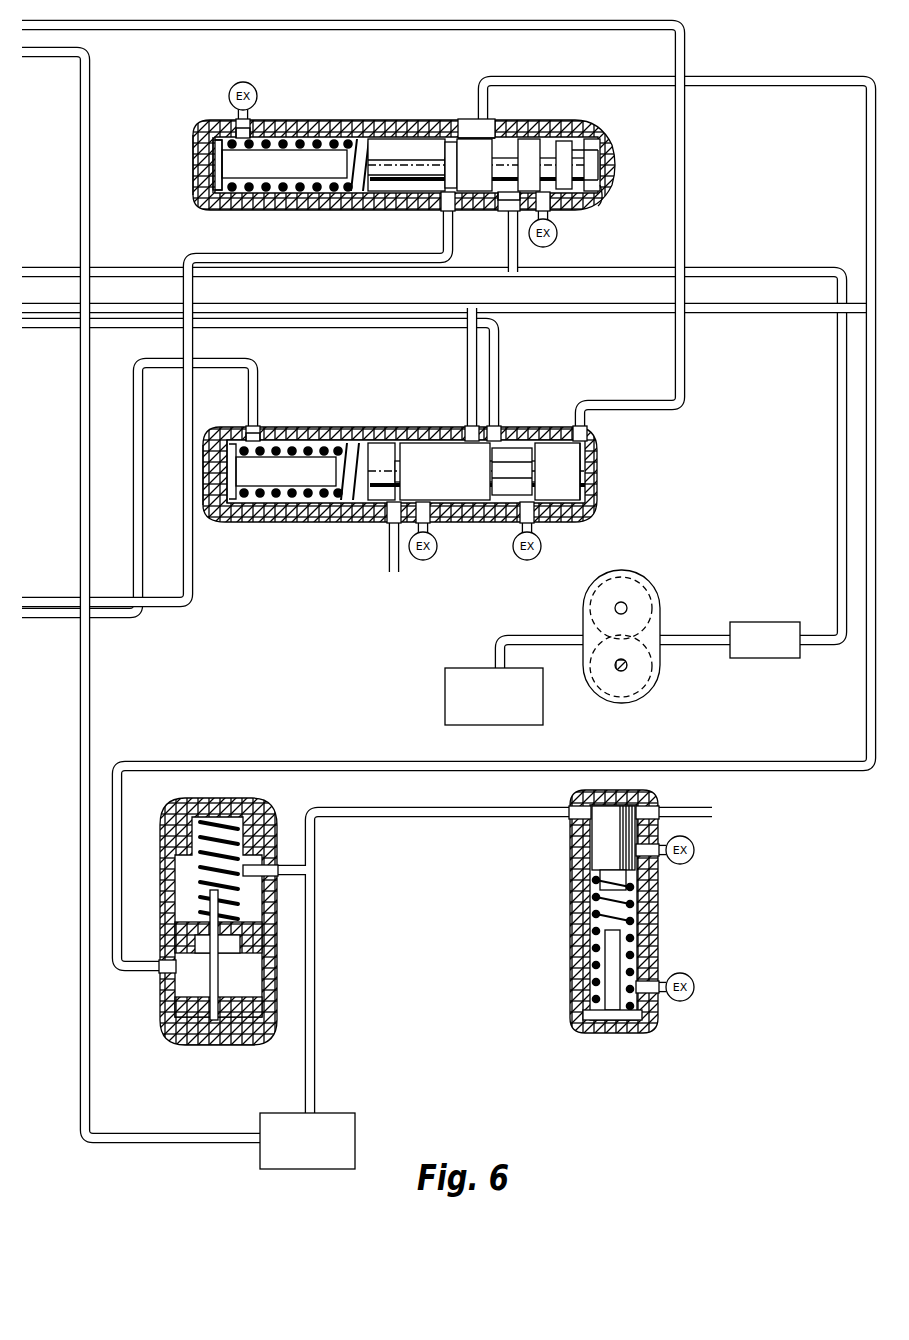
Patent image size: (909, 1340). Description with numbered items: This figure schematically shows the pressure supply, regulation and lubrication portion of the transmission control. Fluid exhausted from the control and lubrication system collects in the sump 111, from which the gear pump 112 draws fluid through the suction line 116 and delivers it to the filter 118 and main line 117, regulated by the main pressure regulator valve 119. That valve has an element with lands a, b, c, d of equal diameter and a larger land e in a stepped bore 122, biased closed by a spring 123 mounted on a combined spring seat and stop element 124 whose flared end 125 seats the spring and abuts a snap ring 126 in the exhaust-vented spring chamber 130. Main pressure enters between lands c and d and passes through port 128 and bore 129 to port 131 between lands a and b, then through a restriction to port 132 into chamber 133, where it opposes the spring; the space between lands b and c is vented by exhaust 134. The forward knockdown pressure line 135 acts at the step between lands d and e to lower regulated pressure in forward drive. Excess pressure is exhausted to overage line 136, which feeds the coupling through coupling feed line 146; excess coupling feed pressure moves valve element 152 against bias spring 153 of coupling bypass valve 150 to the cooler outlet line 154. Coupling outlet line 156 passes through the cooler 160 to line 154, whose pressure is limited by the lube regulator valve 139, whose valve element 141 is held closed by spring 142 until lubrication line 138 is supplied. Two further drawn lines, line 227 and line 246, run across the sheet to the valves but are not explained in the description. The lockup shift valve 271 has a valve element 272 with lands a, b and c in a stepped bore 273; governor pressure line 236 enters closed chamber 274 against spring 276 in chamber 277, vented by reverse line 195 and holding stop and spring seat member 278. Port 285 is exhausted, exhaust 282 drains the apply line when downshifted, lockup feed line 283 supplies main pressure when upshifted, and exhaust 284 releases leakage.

The sump 111 is at (460, 672).
The gear pump 112 is at (650, 592).
The suction line 116 is at (557, 635).
The main line 117 is at (816, 635).
The filter 118 is at (757, 622).
The main pressure regulator valve 119 is at (408, 167).
The stepped bore 122 is at (452, 142).
The spring 123 is at (290, 132).
The combined spring seat and stop element 124 is at (214, 173).
The flared end 125 is at (232, 130).
The snap ring 126 is at (200, 145).
The port 128 is at (505, 205).
The bore 129 is at (508, 137).
The spring chamber 130 is at (262, 131).
The port 131 is at (593, 168).
The port 132 is at (608, 170).
The chamber 133 is at (588, 196).
The exhaust 134 is at (559, 231).
The forward knockdown pressure line 135 is at (30, 600).
The overage line 136 is at (505, 81).
The lubrication line 138 is at (690, 812).
The lube regulator valve 139 is at (608, 938).
The valve element 141 is at (597, 848).
The spring 142 is at (651, 916).
The coupling feed line 146 is at (121, 822).
The coupling bypass valve 150 is at (184, 933).
The valve element 152 is at (182, 928).
The bias spring 153 is at (225, 830).
The cooler outlet line 154 is at (315, 872).
The coupling outlet line 156 is at (35, 55).
The cooler 160 is at (292, 1162).
The reverse line 195 is at (218, 363).
The main line 227 is at (30, 270).
The governor pressure line 236 is at (73, 26).
The signal line 246 is at (121, 310).
The lockup shift valve 271 is at (425, 466).
The valve element 272 is at (507, 465).
The stepped bore 273 is at (508, 505).
The closed chamber 274 is at (592, 446).
The spring 276 is at (286, 446).
The chamber 277 is at (270, 432).
The stop and spring seat member 278 is at (225, 442).
The exhaust 282 is at (30, 327).
The lockup feed line 283 is at (467, 370).
The exhaust 284 is at (434, 558).
The port 285 is at (396, 503).
The land a is at (585, 162).
The land b is at (562, 162).
The land c is at (528, 162).
The land d is at (478, 148).
The land e is at (396, 146).